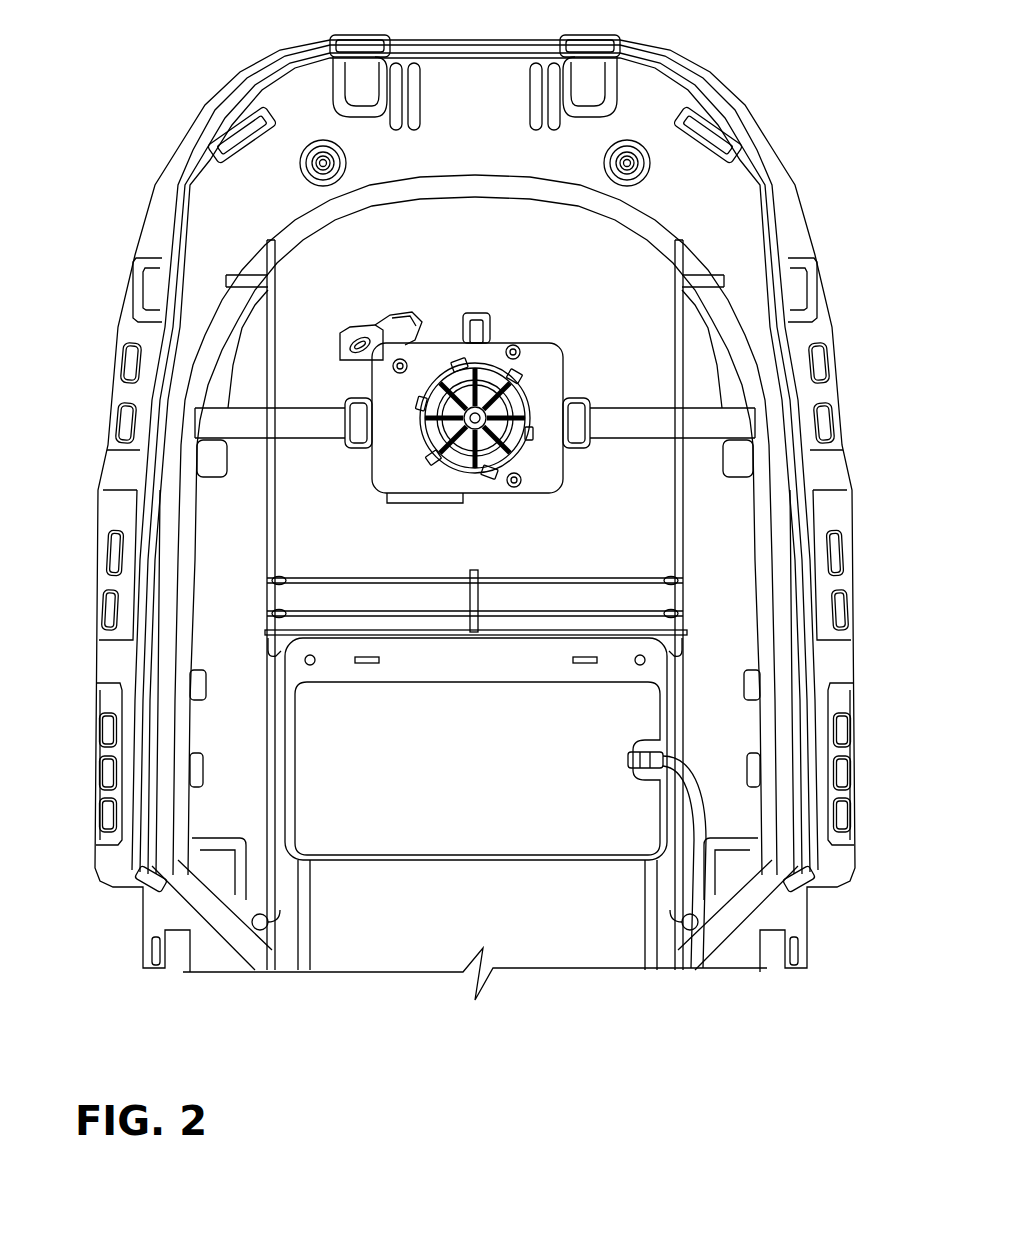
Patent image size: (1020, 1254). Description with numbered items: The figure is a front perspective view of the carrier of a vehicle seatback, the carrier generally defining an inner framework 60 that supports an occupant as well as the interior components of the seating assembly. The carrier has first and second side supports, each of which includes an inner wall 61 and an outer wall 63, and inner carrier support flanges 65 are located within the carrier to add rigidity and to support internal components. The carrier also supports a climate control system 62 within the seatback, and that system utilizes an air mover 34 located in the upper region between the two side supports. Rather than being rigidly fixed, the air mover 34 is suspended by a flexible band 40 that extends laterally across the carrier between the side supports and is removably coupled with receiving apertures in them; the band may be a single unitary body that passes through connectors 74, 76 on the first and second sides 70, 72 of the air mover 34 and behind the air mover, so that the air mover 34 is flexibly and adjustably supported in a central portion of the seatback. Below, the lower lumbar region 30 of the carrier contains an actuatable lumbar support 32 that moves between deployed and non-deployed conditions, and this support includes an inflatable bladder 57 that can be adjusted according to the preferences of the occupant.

The lower lumbar region 30 is at (603, 804).
The actuatable lumbar support 32 is at (568, 817).
The air mover 34 is at (595, 363).
The flexible band 40 is at (697, 415).
The inflatable bladder 57 is at (446, 788).
The inner framework 60 is at (270, 547).
The inner wall 61 is at (170, 527).
The climate control system 62 is at (547, 295).
The outer wall 63 is at (98, 555).
The inner carrier support flange 65 is at (227, 343).
The first side of the air mover 70 is at (372, 463).
The second side of the air mover 72 is at (563, 387).
The connector 74 is at (353, 447).
The connector 76 is at (577, 453).